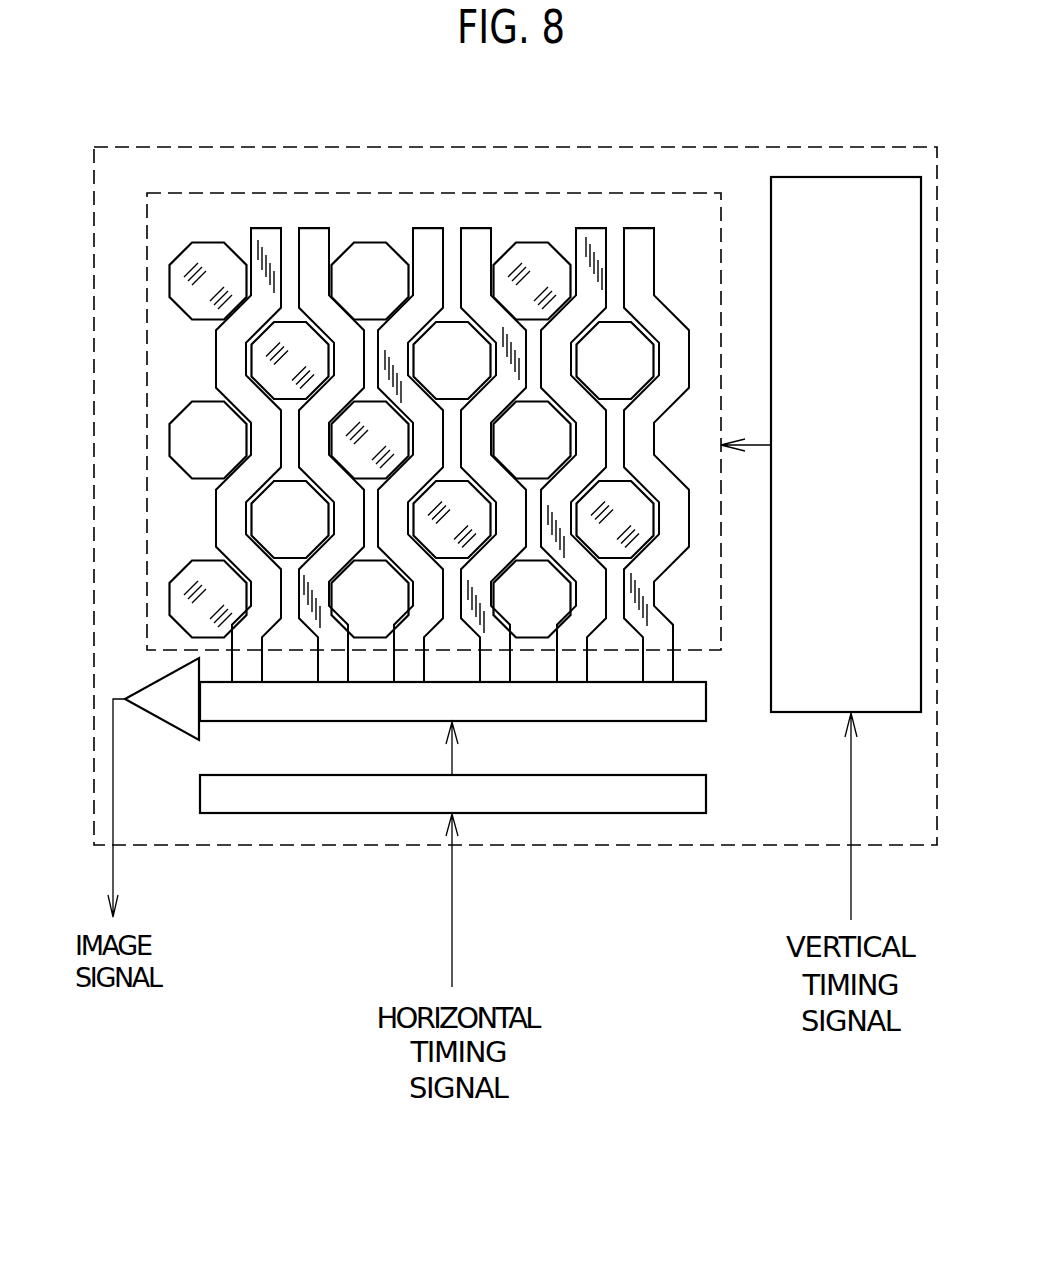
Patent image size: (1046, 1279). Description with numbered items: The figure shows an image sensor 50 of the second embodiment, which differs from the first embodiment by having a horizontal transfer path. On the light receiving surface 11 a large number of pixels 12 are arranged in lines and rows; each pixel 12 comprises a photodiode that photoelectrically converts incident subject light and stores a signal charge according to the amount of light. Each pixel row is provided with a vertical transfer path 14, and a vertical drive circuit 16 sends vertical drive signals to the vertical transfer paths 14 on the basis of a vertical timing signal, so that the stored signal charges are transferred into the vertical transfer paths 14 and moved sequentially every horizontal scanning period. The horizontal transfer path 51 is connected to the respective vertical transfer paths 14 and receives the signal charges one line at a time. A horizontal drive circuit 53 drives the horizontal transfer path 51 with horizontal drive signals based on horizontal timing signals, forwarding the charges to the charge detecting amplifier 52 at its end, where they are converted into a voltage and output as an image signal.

The light receiving surface 11 is at (512, 193).
The pixel 12 is at (184, 410).
The vertical transfer path 14 is at (313, 237).
The vertical drive circuit 16 is at (865, 177).
The image sensor 50 is at (626, 147).
The horizontal transfer path 51 is at (532, 722).
The charge detecting amplifier 52 is at (152, 718).
The horizontal drive circuit 53 is at (706, 800).